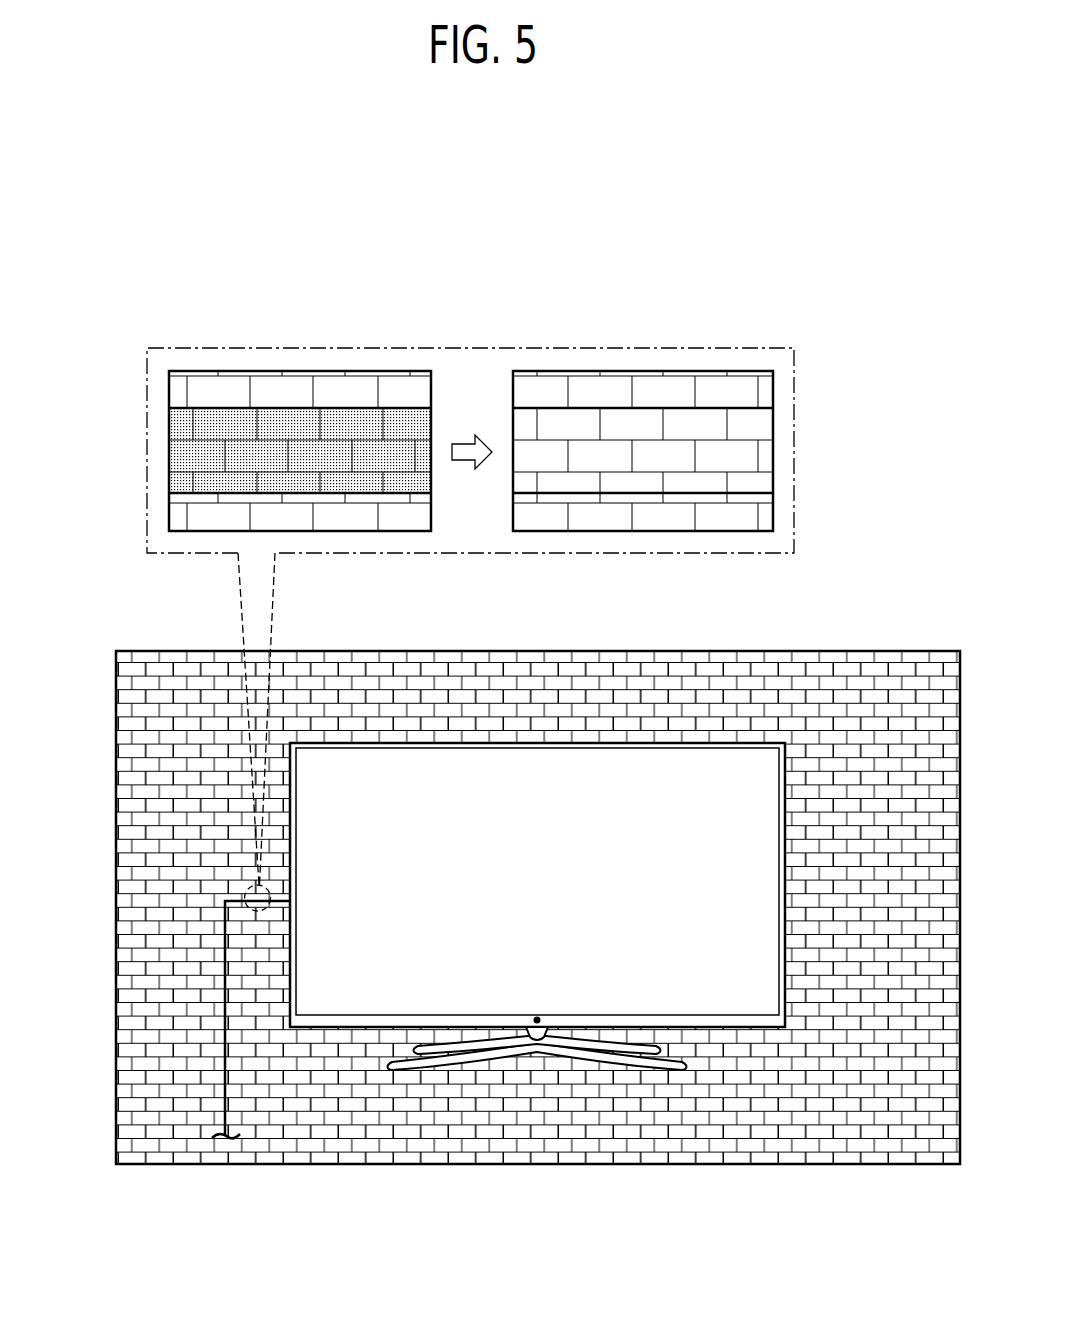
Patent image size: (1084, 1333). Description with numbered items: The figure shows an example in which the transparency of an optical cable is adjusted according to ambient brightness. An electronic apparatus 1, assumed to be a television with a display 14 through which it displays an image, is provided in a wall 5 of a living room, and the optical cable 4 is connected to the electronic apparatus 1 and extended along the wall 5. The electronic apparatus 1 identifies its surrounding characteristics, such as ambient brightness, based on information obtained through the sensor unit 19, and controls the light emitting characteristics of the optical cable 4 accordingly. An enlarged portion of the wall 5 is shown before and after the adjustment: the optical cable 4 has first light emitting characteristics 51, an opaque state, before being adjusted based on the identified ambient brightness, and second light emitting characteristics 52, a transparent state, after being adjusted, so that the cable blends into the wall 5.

The electronic apparatus 1 is at (527, 742).
The display 14 is at (687, 775).
The sensor unit 19 is at (544, 1035).
The optical cable 4 is at (215, 408).
The wall 5 is at (400, 390).
The first light emitting characteristics 51 is at (315, 435).
The second light emitting characteristics 52 is at (658, 435).